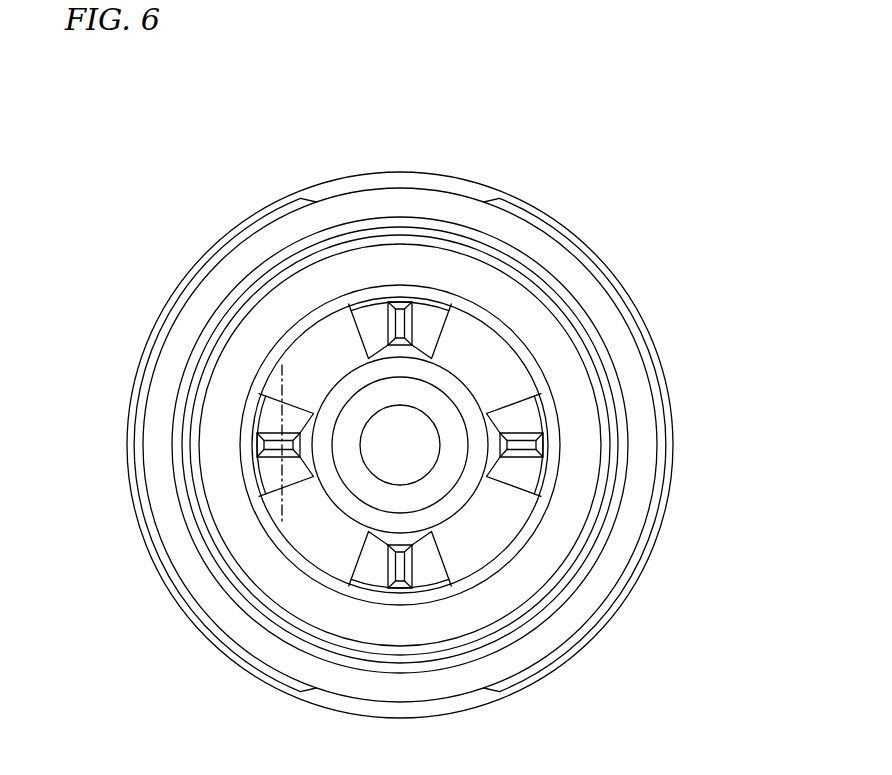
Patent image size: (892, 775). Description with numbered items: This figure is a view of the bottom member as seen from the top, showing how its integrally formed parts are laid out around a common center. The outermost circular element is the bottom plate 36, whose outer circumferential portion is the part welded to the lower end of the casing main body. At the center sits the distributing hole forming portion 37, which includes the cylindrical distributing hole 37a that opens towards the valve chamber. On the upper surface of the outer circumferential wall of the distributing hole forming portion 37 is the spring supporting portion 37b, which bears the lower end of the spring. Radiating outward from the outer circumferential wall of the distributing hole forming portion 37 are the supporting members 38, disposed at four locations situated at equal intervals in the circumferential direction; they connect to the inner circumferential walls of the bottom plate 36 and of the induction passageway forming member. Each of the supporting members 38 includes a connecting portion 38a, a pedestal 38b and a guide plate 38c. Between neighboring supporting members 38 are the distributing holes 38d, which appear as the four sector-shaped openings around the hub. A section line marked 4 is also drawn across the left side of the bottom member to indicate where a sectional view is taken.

The bottom plate 36 is at (205, 315).
The distributing hole forming portion 37 is at (463, 382).
The distributing hole 37a is at (388, 423).
The spring supporting portion 37b is at (441, 385).
The supporting members 38 is at (539, 476).
The connecting portion 38a is at (550, 431).
The pedestal 38b is at (538, 458).
The guide plate 38c is at (525, 478).
The distributing holes 38d is at (503, 538).
The section line IV-IV 4 is at (282, 515).